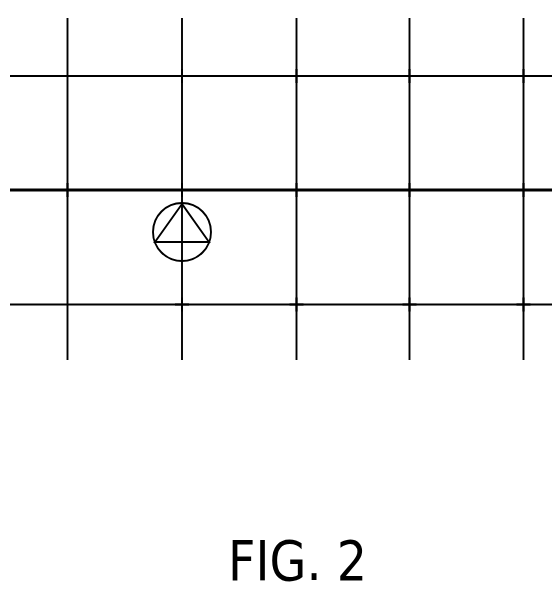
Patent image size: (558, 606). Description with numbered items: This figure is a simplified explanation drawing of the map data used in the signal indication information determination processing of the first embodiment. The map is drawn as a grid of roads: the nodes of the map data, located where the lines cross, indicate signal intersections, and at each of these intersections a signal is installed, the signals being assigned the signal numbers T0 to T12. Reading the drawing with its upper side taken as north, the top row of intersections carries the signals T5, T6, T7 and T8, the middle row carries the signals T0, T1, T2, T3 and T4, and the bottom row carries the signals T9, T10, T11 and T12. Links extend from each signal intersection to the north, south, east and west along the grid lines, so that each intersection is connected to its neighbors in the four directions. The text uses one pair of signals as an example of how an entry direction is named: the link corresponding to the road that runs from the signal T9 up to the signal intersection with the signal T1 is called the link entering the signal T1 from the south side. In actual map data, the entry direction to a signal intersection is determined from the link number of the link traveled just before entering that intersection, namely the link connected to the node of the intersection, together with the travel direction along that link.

The signal T0 is at (55, 179).
The signal T1 is at (171, 179).
The signal T2 is at (285, 179).
The signal T3 is at (399, 179).
The signal T4 is at (513, 179).
The signal T5 is at (170, 64).
The signal T6 is at (284, 64).
The signal T7 is at (398, 64).
The signal T8 is at (512, 64).
The signal T9 is at (171, 293).
The signal T10 is at (279, 293).
The signal T11 is at (393, 293).
The signal T12 is at (507, 293).